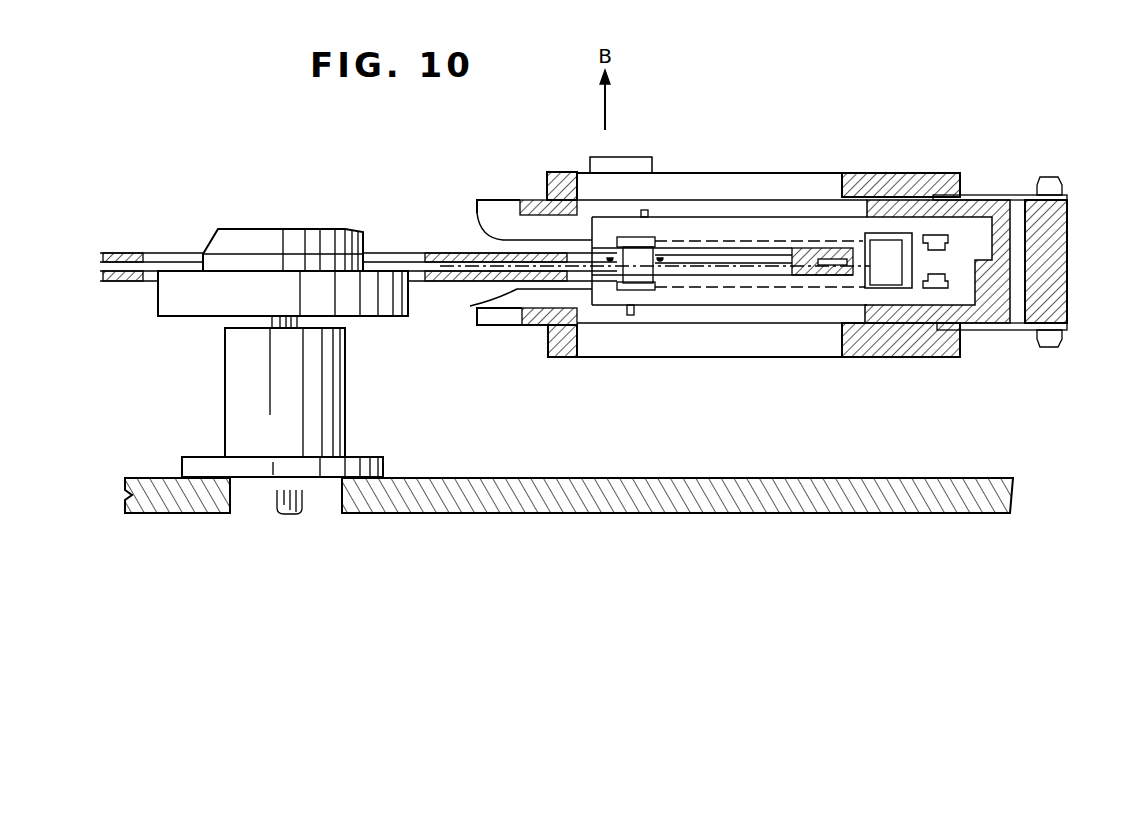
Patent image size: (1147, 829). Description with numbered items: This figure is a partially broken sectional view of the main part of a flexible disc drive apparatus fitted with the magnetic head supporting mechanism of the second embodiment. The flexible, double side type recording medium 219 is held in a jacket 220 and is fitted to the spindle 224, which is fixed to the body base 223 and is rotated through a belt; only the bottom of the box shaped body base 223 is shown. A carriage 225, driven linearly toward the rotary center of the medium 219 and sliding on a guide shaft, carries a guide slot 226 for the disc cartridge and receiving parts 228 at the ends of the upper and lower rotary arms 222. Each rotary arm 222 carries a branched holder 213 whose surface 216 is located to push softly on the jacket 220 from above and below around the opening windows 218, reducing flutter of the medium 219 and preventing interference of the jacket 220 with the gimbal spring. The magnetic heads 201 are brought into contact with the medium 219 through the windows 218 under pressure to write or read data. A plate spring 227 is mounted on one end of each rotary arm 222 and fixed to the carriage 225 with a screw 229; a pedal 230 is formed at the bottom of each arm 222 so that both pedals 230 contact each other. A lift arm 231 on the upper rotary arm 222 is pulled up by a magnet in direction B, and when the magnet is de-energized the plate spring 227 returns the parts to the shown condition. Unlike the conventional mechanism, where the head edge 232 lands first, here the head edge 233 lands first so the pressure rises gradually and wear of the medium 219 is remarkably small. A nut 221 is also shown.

The magnetic head 201 is at (618, 237).
The branched holder 213 is at (850, 225).
The surface of the holder 216 is at (742, 250).
The opening window 218 is at (782, 253).
The recording medium 219 is at (383, 252).
The jacket 220 is at (430, 250).
The nut 221 is at (950, 245).
The rotary arm 222 is at (558, 172).
The body base 223 is at (608, 495).
The spindle 224 is at (318, 390).
The carriage 225 is at (477, 205).
The guide slot 226 is at (513, 248).
The plate spring 227 is at (977, 193).
The receiving part 228 is at (532, 327).
The screw 229 is at (1055, 180).
The pedal 230 is at (1022, 282).
The lift arm 231 is at (628, 157).
The head edge 232 is at (593, 250).
The head edge 233 is at (681, 250).